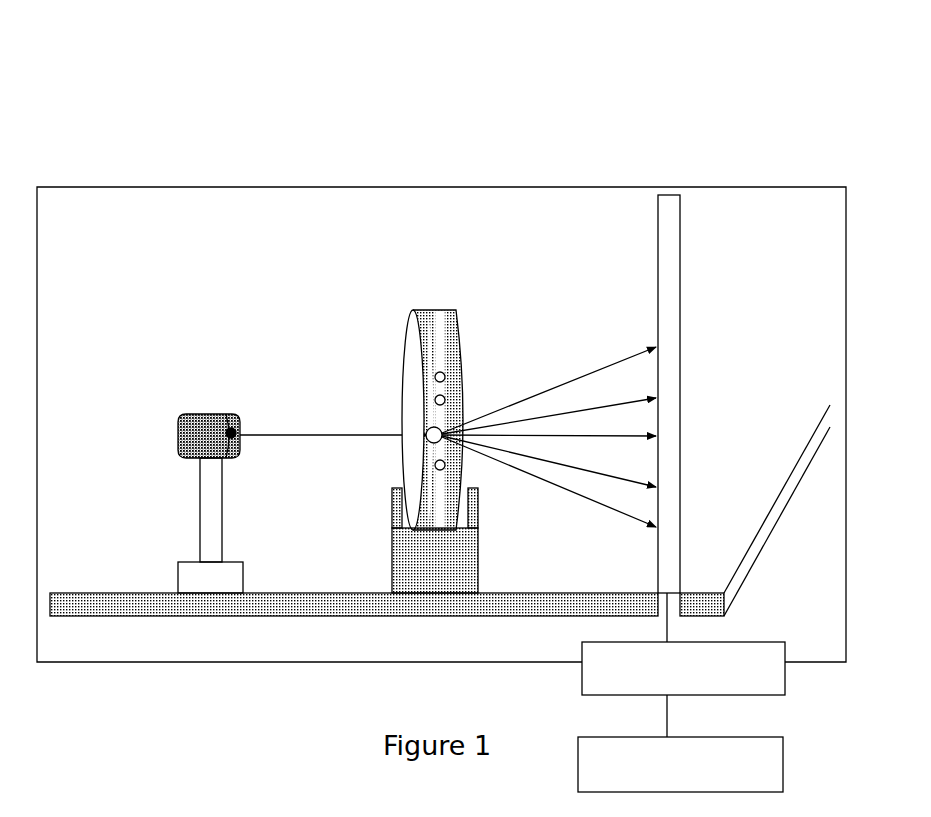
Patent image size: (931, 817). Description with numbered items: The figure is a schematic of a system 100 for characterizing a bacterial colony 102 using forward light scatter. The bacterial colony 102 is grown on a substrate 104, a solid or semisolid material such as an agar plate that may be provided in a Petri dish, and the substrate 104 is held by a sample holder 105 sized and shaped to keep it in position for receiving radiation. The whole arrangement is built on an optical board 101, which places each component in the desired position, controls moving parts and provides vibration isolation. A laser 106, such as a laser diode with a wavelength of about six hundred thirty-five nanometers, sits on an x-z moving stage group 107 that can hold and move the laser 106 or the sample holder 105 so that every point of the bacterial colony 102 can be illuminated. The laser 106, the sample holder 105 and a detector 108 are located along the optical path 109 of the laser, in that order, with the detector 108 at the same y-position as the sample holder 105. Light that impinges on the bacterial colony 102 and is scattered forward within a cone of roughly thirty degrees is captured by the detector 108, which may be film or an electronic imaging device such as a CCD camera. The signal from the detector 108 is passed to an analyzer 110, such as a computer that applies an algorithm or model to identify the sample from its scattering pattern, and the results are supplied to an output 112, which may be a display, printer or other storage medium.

The system 100 is at (198, 110).
The optical board 101 is at (145, 612).
The bacterial colony 102 is at (427, 431).
The substrate 104 is at (446, 318).
The sample holder 105 is at (410, 577).
The laser 106 is at (180, 430).
The x-z moving stage group 107 is at (213, 577).
The detector 108 is at (658, 258).
The optical path 109 is at (270, 430).
The analyzer 110 is at (764, 642).
The output 112 is at (783, 737).